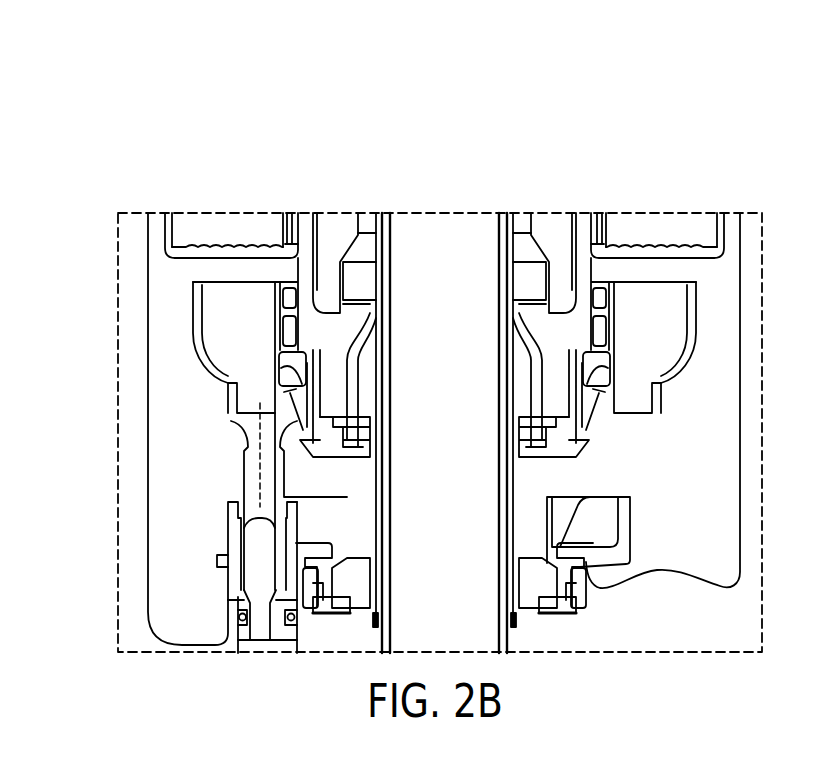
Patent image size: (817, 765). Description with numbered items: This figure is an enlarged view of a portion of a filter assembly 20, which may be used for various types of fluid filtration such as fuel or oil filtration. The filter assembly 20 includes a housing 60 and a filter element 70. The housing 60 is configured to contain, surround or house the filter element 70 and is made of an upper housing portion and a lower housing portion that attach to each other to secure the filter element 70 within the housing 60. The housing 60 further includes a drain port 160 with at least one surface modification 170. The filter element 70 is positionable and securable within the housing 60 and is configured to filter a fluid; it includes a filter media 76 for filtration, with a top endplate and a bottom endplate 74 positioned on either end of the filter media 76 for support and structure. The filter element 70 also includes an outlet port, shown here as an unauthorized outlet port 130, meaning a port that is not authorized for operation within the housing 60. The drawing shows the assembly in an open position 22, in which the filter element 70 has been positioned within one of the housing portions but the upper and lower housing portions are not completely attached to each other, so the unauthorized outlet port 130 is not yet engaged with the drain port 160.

The filter assembly 20 is at (759, 144).
The open position 22 is at (684, 106).
The housing 60 is at (108, 345).
The filter element 70 is at (679, 209).
The bottom endplate 74 is at (694, 263).
The filter media 76 is at (232, 229).
The unauthorized outlet port 130 is at (232, 470).
The drain port 160 is at (214, 588).
The surface modification 170 is at (226, 497).